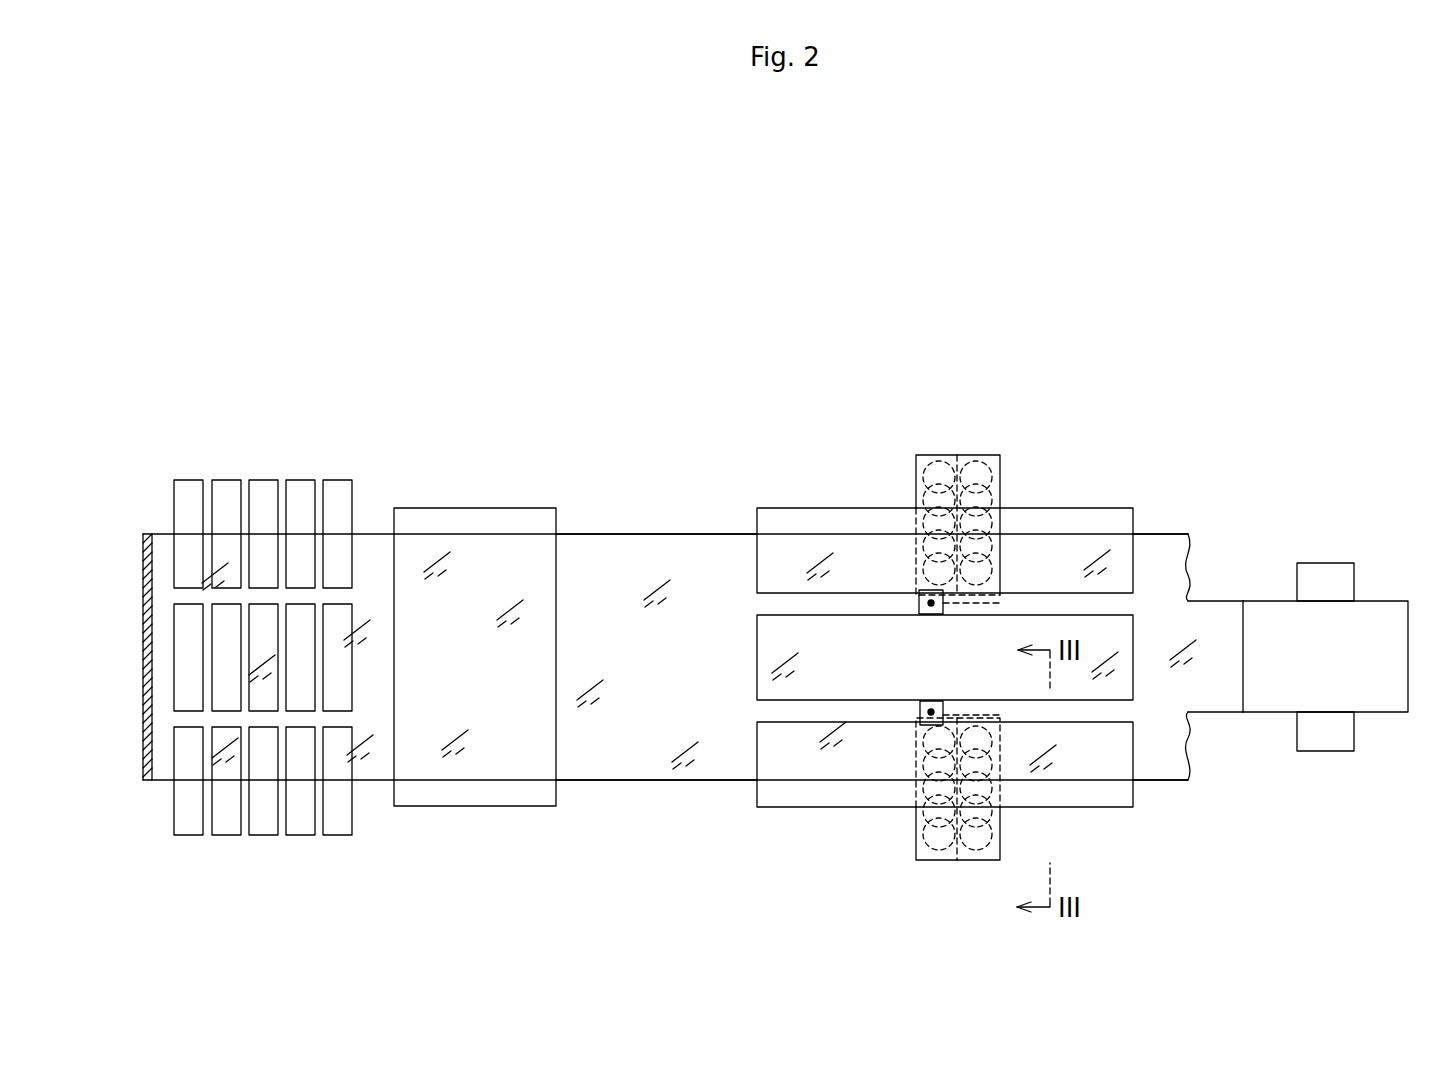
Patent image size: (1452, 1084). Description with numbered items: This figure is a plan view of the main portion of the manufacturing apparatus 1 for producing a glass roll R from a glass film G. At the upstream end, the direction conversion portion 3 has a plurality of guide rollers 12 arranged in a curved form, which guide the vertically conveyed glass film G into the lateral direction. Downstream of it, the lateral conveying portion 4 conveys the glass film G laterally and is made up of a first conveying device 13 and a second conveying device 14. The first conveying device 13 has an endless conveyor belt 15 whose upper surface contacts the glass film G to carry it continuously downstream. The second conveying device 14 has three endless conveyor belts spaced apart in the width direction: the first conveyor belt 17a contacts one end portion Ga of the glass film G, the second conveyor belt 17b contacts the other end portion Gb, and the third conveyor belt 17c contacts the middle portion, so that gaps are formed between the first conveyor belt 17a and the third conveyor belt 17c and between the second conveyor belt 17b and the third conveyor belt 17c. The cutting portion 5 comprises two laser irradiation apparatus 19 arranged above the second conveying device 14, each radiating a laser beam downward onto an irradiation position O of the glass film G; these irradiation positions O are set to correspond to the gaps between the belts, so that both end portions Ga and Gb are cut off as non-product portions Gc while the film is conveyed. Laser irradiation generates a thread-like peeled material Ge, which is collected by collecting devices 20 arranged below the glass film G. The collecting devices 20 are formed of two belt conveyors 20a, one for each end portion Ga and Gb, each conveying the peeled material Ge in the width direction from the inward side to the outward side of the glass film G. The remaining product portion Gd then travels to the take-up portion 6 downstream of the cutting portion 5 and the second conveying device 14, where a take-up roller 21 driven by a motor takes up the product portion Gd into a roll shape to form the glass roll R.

The manufacturing apparatus 1 is at (1052, 303).
The direction conversion portion 3 is at (262, 708).
The lateral conveying portion 4 is at (545, 858).
The cutting portion 5 is at (905, 478).
The take-up portion 6 is at (1395, 528).
The guide rollers 12 is at (185, 835).
The first conveying device 13 is at (443, 830).
The second conveying device 14 is at (918, 685).
The conveyor belt 15 is at (493, 806).
The first conveyor belt 17a is at (757, 793).
The second conveyor belt 17b is at (800, 508).
The third conveyor belt 17c is at (757, 657).
The laser irradiation apparatus 19 is at (917, 603).
The collecting devices 20 is at (958, 440).
The belt conveyors 20a is at (983, 457).
The take-up roller 21 is at (1343, 731).
The glass film G is at (645, 567).
The one end portion Ga is at (628, 781).
The other end portion Gb is at (602, 535).
The non-product portions Gc is at (1160, 553).
The product portion Gd is at (1218, 614).
The thread-like peeled material Ge is at (947, 463).
The irradiation position O is at (931, 603).
The glass roll R is at (1270, 700).